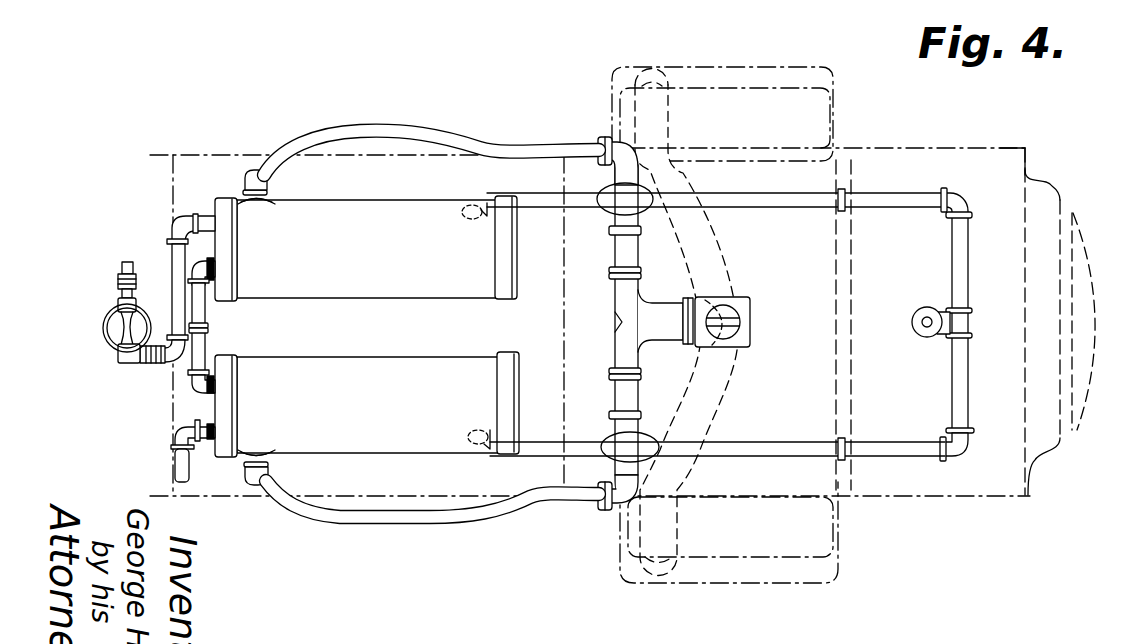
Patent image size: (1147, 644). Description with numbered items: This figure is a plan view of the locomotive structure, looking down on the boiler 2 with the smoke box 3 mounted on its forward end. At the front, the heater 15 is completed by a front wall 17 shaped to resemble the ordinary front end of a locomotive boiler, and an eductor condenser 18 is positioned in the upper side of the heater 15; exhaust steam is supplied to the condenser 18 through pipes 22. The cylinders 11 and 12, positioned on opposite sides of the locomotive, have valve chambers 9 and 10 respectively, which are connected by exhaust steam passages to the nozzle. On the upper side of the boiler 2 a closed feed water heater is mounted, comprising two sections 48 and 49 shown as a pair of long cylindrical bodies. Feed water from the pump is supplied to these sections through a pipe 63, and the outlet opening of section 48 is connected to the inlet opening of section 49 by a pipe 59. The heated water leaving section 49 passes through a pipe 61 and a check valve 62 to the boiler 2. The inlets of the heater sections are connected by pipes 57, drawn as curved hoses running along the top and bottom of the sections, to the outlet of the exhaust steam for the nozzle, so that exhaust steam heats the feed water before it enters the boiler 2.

The boiler 2 is at (205, 156).
The smoke box 3 is at (750, 498).
The valve chamber 9 is at (782, 558).
The valve chamber 10 is at (741, 88).
The cylinder 11 is at (720, 582).
The cylinder 12 is at (797, 66).
The heater 15 is at (1028, 146).
The front wall 17 is at (1093, 313).
The eductor condenser 18 is at (928, 333).
The pipes 22 is at (910, 175).
The section of closed feed water heater 48 is at (367, 418).
The section of closed feed water heater 49 is at (366, 235).
The pipes 57 is at (434, 120).
The pipe 59 is at (200, 351).
The pipe 61 is at (177, 254).
The check valve 62 is at (113, 331).
The pipe 63 is at (188, 473).